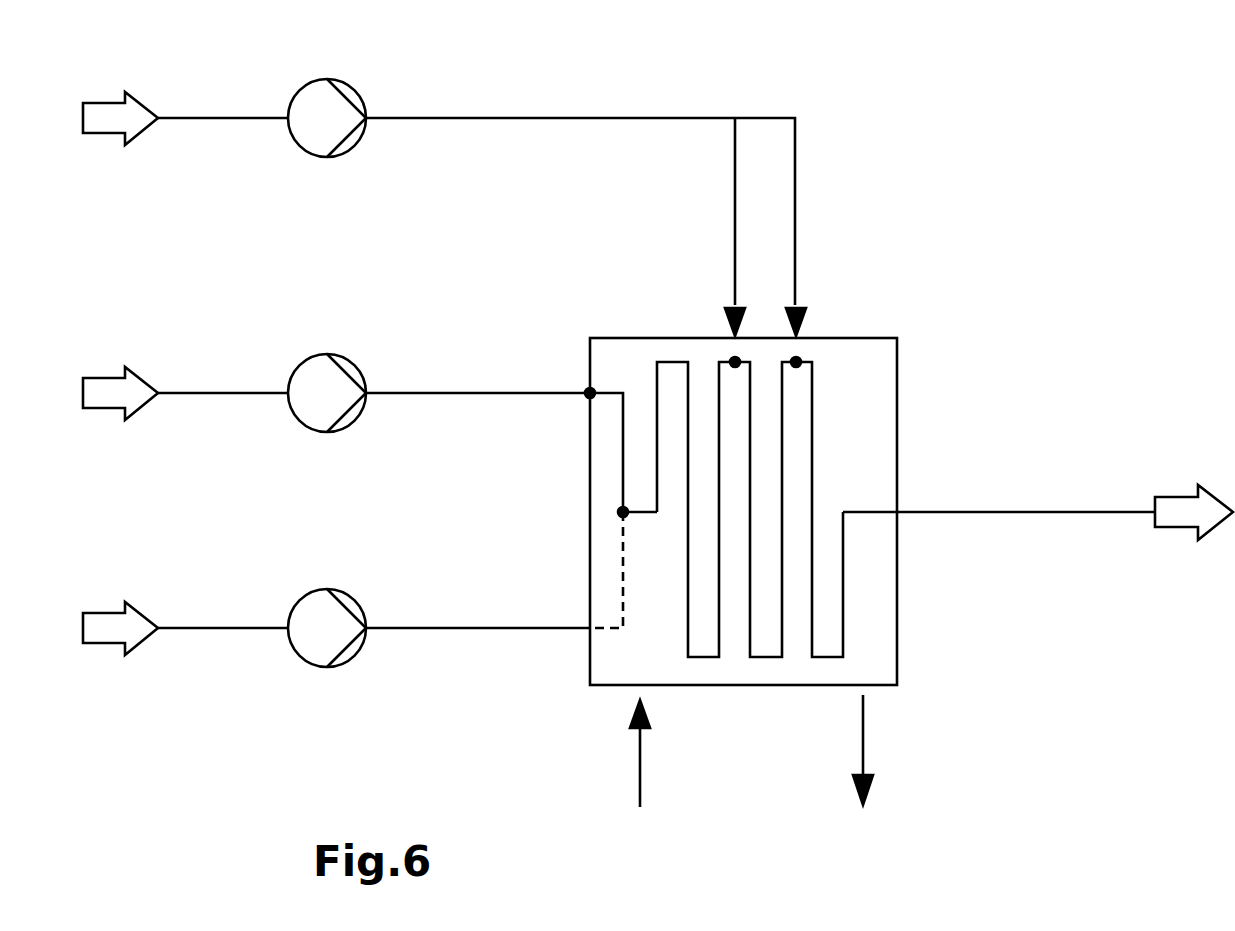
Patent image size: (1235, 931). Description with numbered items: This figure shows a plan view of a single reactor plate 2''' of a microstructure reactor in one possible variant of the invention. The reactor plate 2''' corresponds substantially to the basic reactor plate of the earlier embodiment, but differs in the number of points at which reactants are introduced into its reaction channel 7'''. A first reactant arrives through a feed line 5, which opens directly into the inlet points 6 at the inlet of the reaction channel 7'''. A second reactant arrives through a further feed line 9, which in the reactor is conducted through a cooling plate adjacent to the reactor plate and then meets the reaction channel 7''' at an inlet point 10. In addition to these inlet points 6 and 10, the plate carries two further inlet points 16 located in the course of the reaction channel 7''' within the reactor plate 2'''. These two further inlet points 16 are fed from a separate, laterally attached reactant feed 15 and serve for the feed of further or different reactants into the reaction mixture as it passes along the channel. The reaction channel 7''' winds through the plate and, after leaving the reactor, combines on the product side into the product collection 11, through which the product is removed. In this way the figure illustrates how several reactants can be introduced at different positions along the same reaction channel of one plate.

The reactant feed 15 is at (531, 118).
The feed line 5 is at (422, 393).
The inlet points 6 is at (590, 393).
The inlet point 10 is at (623, 512).
The feed line 9 is at (490, 628).
The further inlet points 16 is at (735, 362).
The reactor plate 2''' is at (807, 567).
The reaction channel 7''' is at (934, 586).
The product collection 11 is at (1103, 512).